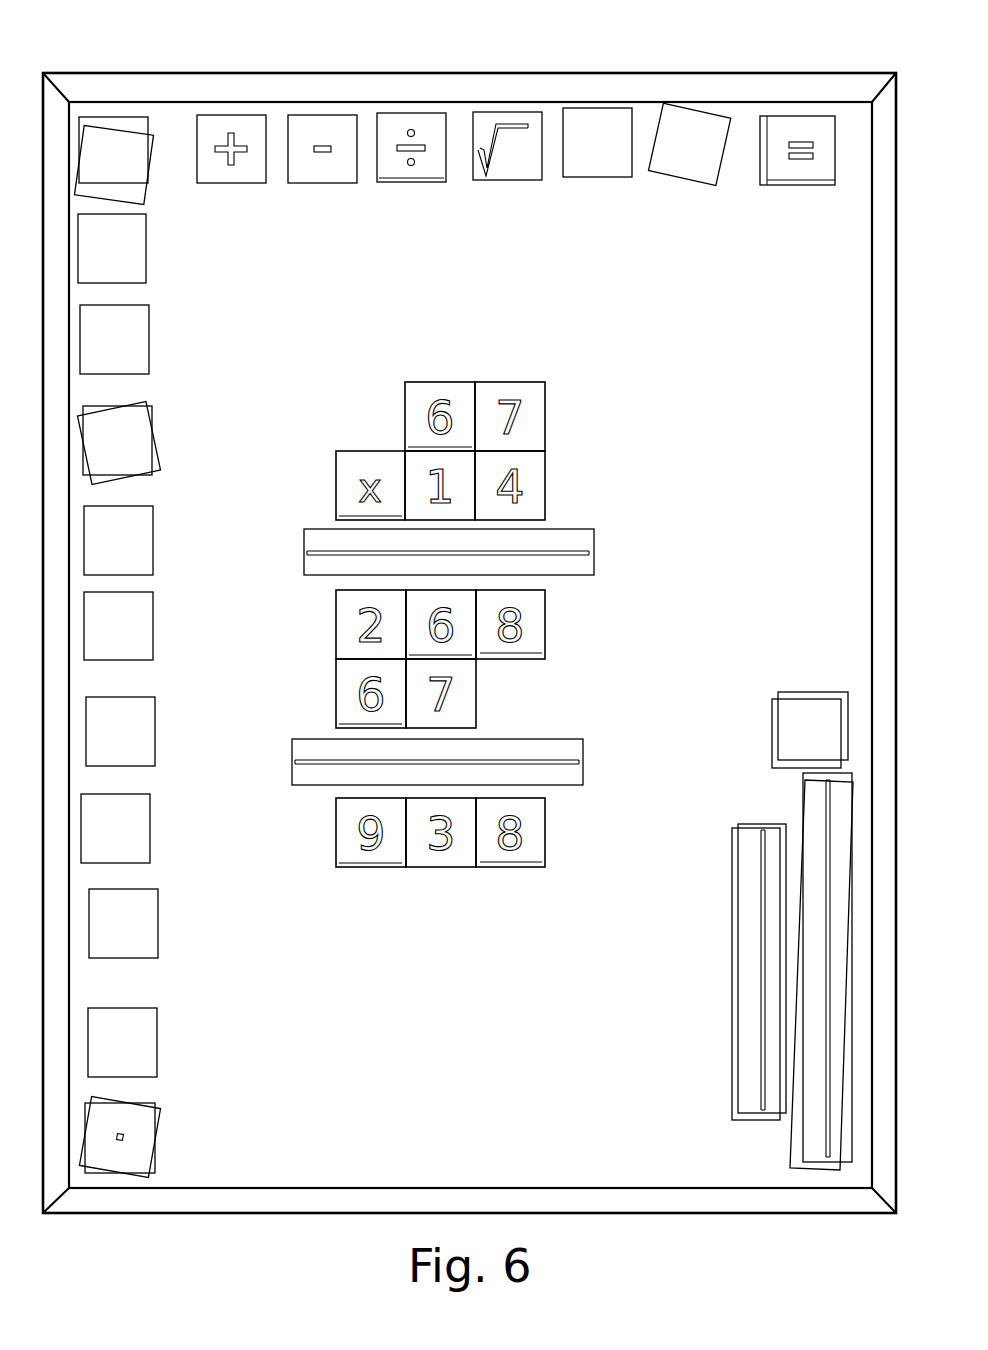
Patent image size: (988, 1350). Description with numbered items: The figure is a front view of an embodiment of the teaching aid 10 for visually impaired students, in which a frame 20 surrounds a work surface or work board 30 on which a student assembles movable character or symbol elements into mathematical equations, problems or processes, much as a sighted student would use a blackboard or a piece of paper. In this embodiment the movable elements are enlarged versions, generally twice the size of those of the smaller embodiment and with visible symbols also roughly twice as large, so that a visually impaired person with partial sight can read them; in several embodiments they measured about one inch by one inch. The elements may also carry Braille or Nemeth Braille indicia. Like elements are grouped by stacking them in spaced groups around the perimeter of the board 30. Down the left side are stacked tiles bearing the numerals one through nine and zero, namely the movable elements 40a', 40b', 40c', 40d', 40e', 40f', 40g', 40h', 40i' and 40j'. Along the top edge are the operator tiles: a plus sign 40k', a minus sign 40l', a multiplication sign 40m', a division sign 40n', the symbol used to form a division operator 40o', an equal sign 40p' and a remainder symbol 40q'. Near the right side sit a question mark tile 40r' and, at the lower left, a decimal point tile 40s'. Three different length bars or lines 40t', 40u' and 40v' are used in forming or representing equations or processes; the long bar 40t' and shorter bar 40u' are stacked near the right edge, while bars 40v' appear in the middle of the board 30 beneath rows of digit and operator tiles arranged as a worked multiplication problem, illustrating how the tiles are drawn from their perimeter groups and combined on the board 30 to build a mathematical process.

The teaching aid 10 is at (230, 60).
The frame 20 is at (595, 90).
The work surface or work board 30 is at (623, 295).
The movable element bearing numeral "1" 40a' is at (182, 198).
The movable element bearing numeral "2" 40b' is at (185, 273).
The movable element bearing numeral "3" 40c' is at (177, 351).
The movable element bearing numeral "4" 40d' is at (177, 452).
The movable element bearing numeral "5" 40e' is at (172, 544).
The movable element bearing numeral "6" 40f' is at (169, 626).
The movable element bearing numeral "7" 40g' is at (176, 731).
The movable element bearing numeral "8" 40h' is at (172, 828).
The movable element bearing numeral "9" 40i' is at (179, 926).
The movable element bearing numeral "0" 40j' is at (182, 1042).
The plus sign movable element 40k' is at (266, 191).
The minus sign movable element 40l' is at (341, 201).
The multiplication sign movable element 40m' is at (611, 175).
The division sign movable element 40n' is at (414, 180).
The division operator symbol movable element 40o' is at (510, 192).
The equal sign movable element 40p' is at (802, 223).
The remainder symbol movable element 40q' is at (695, 200).
The question mark movable element 40r' is at (764, 718).
The decimal point movable element 40s' is at (175, 1136).
The bar or line movable element 40t' is at (756, 971).
The bar or line movable element 40u' is at (704, 972).
The bar or line movable element 40v' is at (503, 651).